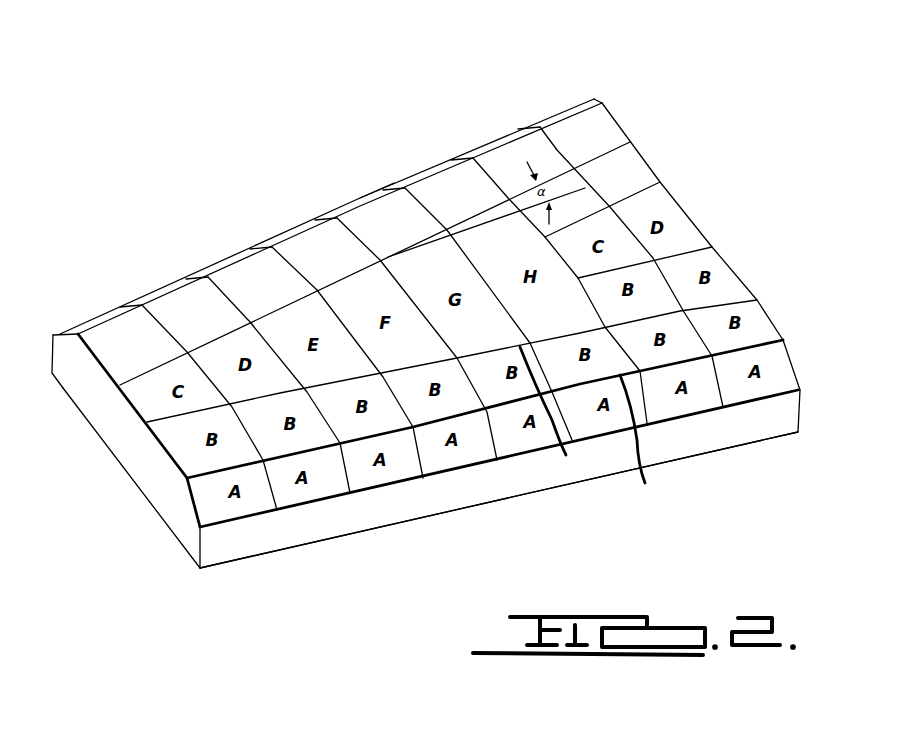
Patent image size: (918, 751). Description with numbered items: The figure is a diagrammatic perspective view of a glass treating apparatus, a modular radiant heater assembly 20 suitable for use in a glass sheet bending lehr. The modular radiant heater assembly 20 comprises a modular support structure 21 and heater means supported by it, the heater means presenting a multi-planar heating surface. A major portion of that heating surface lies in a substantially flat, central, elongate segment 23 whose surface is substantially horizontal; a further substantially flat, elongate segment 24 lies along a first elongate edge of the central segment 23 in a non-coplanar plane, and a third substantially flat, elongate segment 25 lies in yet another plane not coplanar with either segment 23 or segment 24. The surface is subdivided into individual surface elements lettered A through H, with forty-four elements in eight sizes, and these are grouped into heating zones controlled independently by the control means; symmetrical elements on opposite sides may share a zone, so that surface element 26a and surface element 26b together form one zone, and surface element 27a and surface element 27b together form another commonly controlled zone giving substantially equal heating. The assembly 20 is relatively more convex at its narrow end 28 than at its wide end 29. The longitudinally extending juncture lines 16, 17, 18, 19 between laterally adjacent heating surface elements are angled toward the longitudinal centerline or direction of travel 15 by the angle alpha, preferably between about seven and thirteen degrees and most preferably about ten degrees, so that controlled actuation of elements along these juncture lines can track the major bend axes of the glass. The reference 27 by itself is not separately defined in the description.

The longitudinal centerline or direction of travel 15 is at (489, 229).
The longitudinally extending juncture line 16 is at (467, 217).
The longitudinally extending juncture line 17 is at (497, 147).
The longitudinally extending juncture line 18 is at (643, 438).
The longitudinally extending juncture line 19 is at (550, 414).
The modular radiant heater assembly 20 is at (384, 157).
The modular support structure 21 is at (197, 552).
The central elongate segment 23 is at (167, 447).
The segment of the heating surface 24 is at (192, 507).
The segment of the heating surface 25 is at (65, 345).
The surface element 26a is at (732, 280).
The surface element 26b is at (647, 167).
The right side edge 27 is at (687, 210).
The surface element 27a is at (462, 460).
The surface element 27b is at (280, 238).
The narrow end 28 is at (66, 303).
The wide end 29 is at (574, 100).